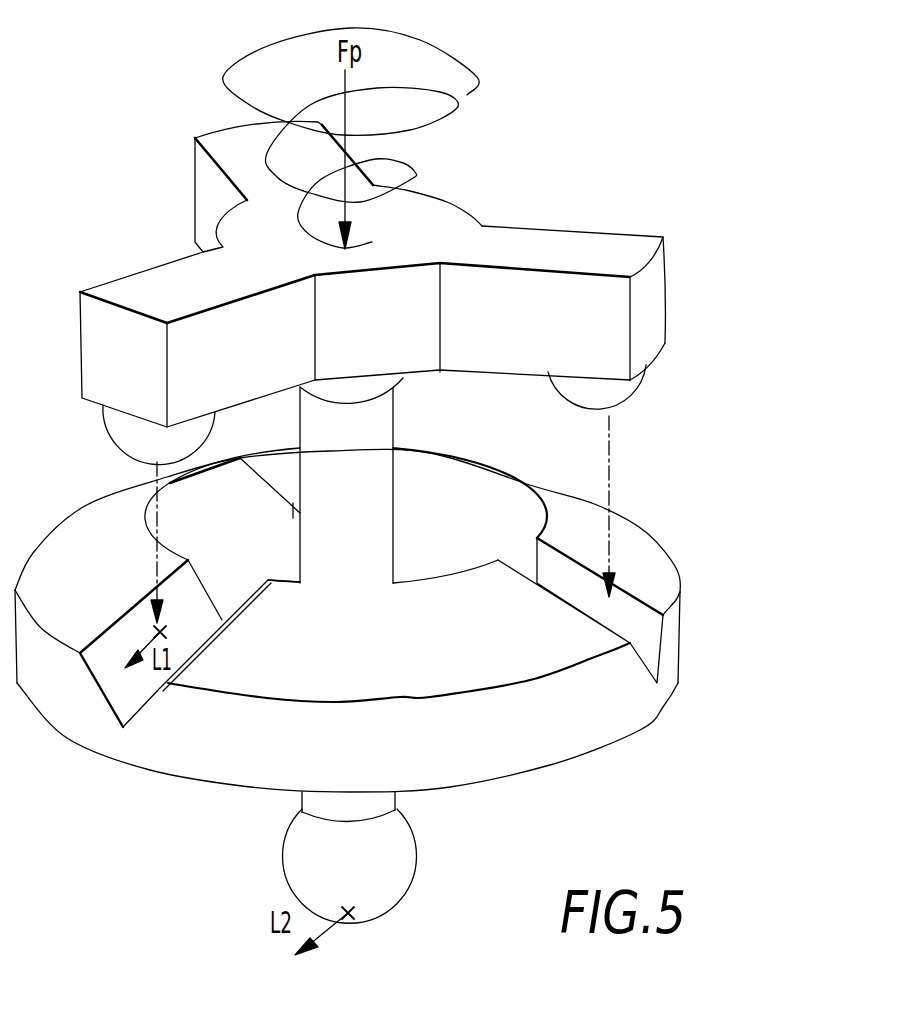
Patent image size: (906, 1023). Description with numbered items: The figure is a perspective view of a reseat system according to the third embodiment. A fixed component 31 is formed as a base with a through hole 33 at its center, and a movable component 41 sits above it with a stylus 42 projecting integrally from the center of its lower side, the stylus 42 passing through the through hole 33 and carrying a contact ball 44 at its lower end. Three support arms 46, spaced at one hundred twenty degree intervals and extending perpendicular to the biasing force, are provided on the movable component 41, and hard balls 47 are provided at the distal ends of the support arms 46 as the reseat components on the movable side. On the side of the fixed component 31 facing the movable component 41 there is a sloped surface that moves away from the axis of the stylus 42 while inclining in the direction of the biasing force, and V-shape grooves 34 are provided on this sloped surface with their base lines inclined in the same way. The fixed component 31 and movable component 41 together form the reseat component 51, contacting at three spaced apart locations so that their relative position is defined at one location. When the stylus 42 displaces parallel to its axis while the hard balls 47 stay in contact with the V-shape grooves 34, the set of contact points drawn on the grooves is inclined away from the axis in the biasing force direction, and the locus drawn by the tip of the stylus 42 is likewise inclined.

The fixed component 31 is at (607, 729).
The through hole 33 is at (256, 572).
The V-shape grooves 34 is at (293, 508).
The movable component 41 is at (440, 218).
The stylus 42 is at (327, 563).
The contact ball 44 is at (377, 897).
The support arms 46 is at (227, 150).
The hard balls 47 is at (130, 425).
The reseat component 51 is at (801, 679).